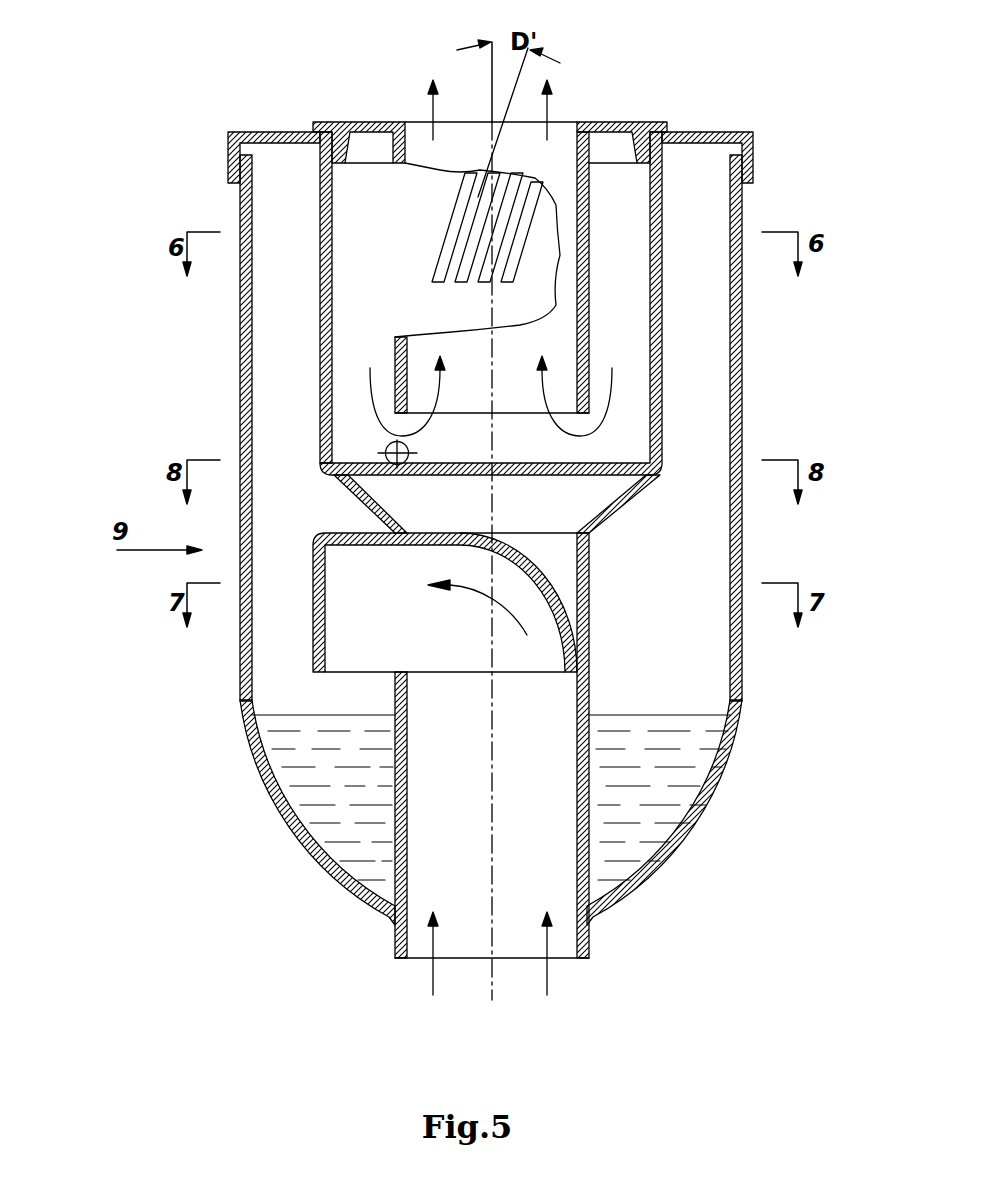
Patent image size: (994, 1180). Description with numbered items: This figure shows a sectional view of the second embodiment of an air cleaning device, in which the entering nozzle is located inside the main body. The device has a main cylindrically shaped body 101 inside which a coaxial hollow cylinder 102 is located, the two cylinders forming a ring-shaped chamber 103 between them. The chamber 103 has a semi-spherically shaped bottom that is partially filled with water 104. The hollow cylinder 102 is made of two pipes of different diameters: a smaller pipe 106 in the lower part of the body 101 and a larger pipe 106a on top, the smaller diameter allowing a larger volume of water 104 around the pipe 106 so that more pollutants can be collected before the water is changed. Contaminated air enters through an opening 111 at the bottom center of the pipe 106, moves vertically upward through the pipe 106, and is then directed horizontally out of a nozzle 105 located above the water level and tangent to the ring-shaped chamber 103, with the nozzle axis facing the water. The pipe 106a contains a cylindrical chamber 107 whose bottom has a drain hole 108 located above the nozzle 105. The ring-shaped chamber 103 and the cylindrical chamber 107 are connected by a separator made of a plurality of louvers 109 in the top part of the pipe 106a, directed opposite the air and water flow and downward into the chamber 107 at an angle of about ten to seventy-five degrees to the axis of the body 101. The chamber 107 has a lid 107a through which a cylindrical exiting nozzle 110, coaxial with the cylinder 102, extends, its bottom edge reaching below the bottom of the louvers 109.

The main body 101 is at (240, 215).
The hollow cylinder 102 is at (662, 425).
The ring-shaped chamber 103 is at (292, 203).
The water 104 is at (363, 833).
The nozzle 105 is at (345, 598).
The pipe 106 is at (397, 730).
The pipe 106a is at (320, 277).
The cylindrical chamber 107 is at (625, 317).
The lid 107a is at (597, 120).
The drain hole 108 is at (383, 447).
The louvers 109 is at (453, 228).
The exiting nozzle 110 is at (590, 232).
The opening 111 is at (587, 955).